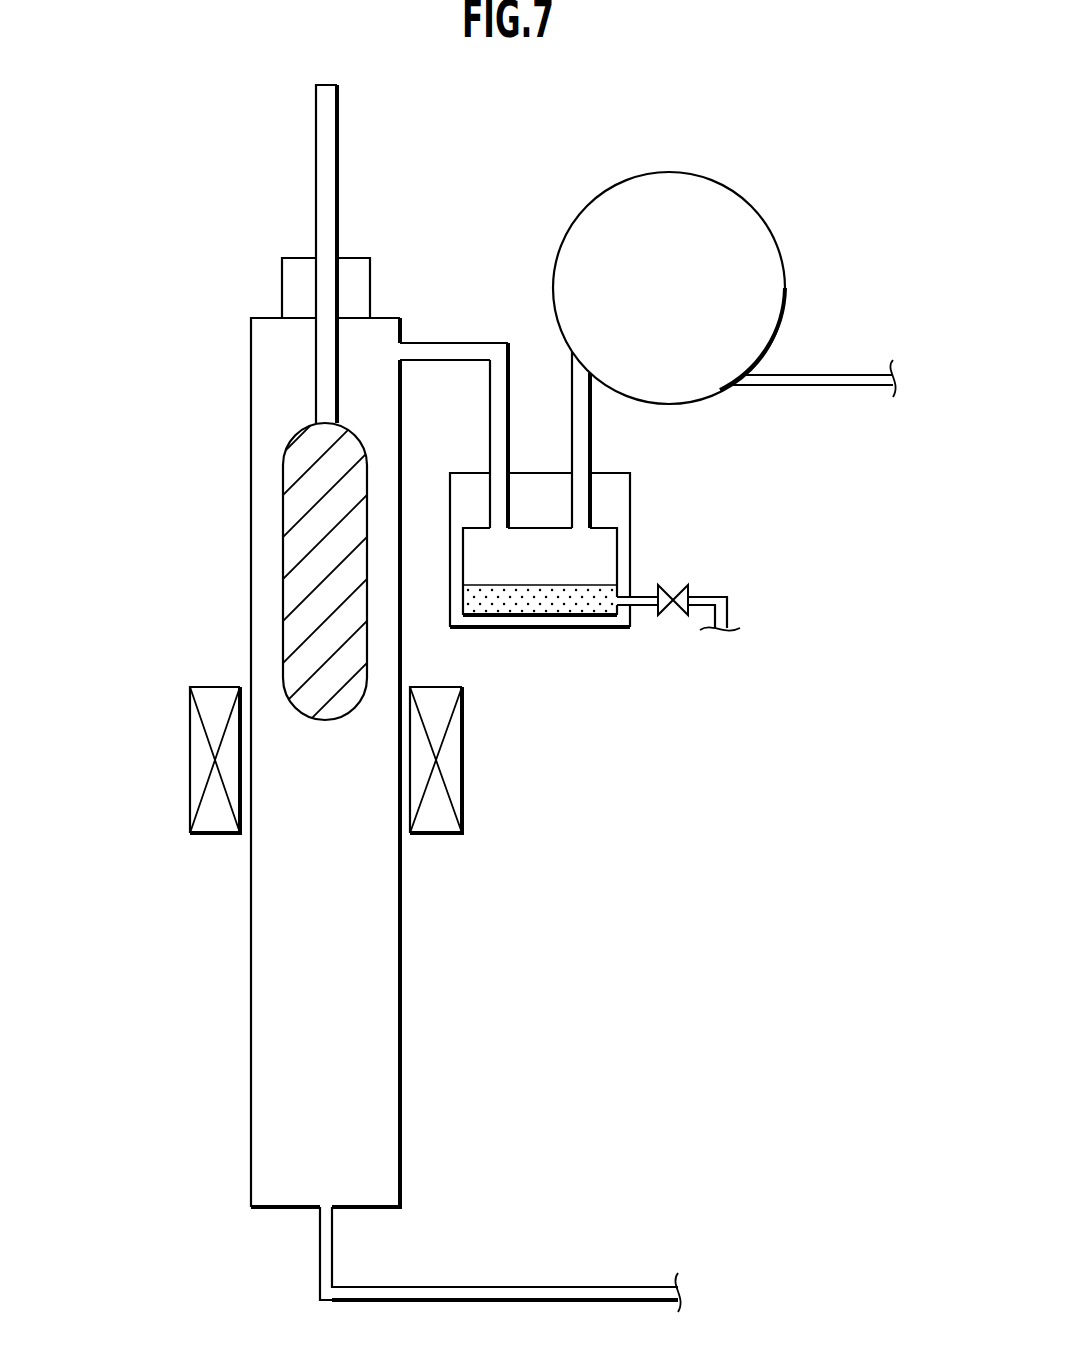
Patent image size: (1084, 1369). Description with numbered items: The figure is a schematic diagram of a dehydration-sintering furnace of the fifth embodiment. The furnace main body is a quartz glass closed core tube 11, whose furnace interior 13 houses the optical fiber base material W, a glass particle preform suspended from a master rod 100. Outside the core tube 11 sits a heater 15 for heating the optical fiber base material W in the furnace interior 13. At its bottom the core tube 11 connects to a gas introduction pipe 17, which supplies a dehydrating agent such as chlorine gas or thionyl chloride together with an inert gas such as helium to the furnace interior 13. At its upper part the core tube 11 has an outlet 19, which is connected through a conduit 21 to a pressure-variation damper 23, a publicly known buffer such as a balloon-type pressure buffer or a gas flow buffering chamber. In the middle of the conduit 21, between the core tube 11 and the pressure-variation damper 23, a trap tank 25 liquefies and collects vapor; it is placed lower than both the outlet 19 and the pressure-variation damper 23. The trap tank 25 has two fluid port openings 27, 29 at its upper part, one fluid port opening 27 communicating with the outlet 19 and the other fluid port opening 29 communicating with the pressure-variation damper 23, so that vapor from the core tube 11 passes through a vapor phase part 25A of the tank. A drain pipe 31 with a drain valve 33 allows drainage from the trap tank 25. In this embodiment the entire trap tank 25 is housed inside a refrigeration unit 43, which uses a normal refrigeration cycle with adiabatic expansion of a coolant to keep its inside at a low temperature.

The core tube 11 is at (402, 972).
The furnace interior 13 is at (392, 1077).
The heater 15 is at (453, 763).
The gas introduction pipe 17 is at (568, 1290).
The outlet 19 is at (408, 352).
The conduit 21 is at (497, 405).
The pressure-variation damper 23 is at (757, 205).
The trap tank 25 is at (587, 572).
The vapor phase part 25A is at (607, 542).
The fluid port opening 27 is at (497, 527).
The fluid port opening 29 is at (580, 527).
The drain pipe 31 is at (705, 600).
The drain valve 33 is at (670, 588).
The refrigeration unit 43 is at (566, 628).
The master rod 100 is at (331, 190).
The optical fiber base material W is at (308, 577).